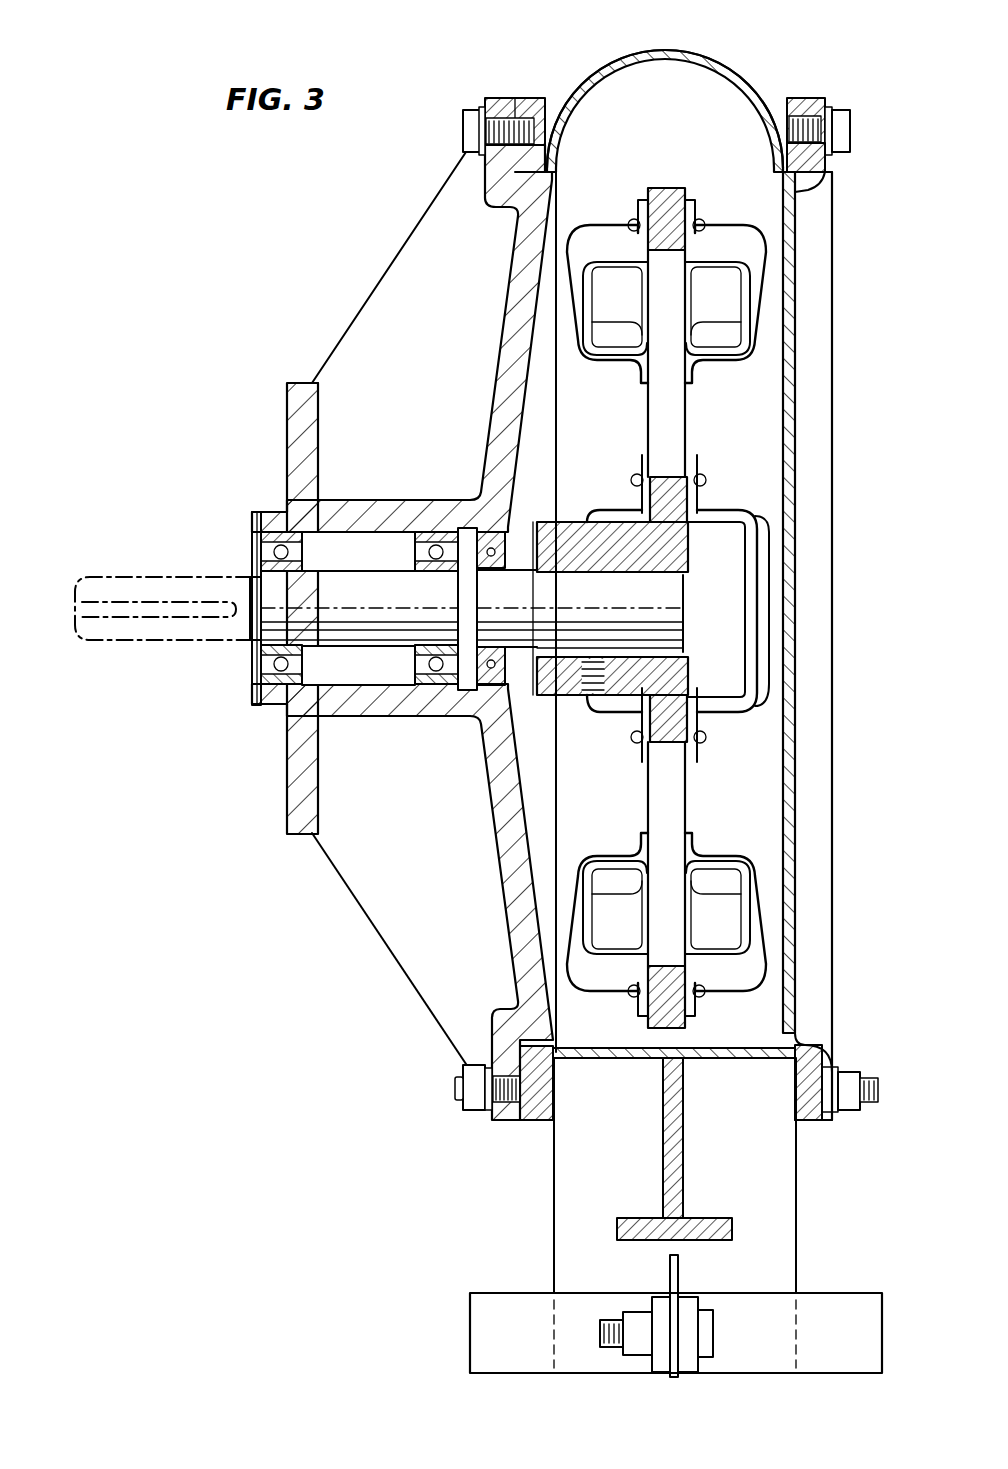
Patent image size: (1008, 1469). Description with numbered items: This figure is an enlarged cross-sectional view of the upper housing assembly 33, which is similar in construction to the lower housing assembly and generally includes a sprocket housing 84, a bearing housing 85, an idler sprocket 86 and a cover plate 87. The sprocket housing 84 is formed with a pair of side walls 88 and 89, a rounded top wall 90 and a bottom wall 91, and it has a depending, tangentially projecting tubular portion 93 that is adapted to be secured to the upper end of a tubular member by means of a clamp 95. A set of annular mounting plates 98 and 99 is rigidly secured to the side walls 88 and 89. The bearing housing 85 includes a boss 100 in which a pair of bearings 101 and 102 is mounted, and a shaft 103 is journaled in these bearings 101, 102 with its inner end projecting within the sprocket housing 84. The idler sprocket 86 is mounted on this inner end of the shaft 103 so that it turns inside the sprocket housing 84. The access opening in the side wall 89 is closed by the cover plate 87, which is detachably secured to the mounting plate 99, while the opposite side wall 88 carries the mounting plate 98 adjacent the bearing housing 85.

The upper housing assembly 33 is at (292, 300).
The sprocket housing 84 is at (625, 55).
The bearing housing 85 is at (287, 440).
The idler sprocket 86 is at (688, 448).
The cover plate 87 is at (797, 742).
The side wall 88 is at (497, 192).
The side wall 89 is at (822, 178).
The rounded top wall 90 is at (735, 70).
The bottom wall 91 is at (600, 1060).
The tubular portion 93 is at (797, 1166).
The clamp 95 is at (470, 1326).
The annular mounting plate 98 is at (527, 98).
The annular mounting plate 99 is at (807, 98).
The boss 100 is at (408, 498).
The bearing 101 is at (257, 672).
The bearing 102 is at (436, 690).
The shaft 103 is at (420, 608).